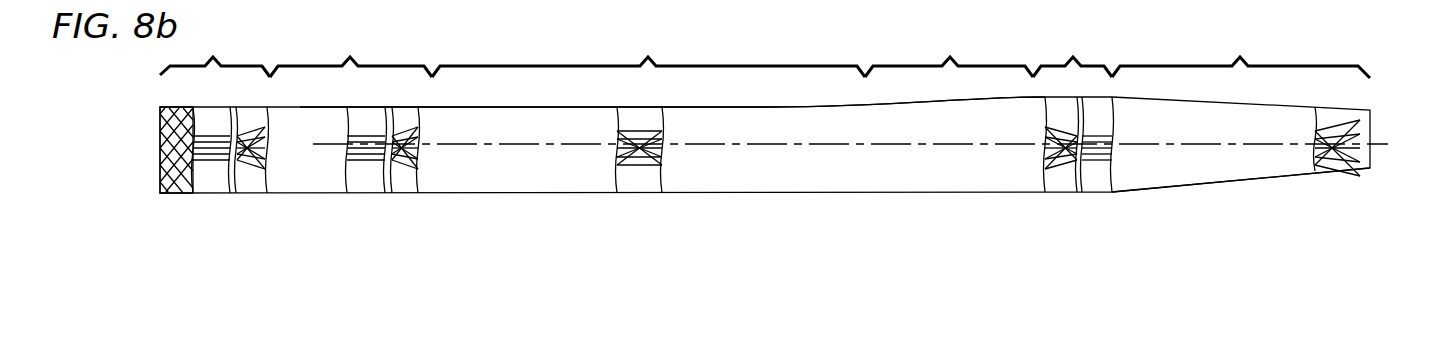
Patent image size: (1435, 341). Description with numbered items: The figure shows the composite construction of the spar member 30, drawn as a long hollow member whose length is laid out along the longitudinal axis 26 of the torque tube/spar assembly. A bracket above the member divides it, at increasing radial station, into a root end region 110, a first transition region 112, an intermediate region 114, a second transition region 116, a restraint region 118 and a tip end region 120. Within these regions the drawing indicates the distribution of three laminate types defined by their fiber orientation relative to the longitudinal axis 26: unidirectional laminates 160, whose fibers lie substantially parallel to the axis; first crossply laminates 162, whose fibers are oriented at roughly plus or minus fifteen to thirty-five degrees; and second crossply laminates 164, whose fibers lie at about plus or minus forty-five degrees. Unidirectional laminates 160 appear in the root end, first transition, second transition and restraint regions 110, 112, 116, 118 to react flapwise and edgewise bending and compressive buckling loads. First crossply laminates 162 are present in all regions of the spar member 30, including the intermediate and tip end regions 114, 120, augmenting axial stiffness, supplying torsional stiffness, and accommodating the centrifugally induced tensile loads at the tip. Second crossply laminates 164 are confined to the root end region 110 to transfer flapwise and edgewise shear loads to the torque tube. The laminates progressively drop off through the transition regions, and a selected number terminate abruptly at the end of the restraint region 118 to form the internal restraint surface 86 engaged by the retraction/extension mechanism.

The spar member 30 is at (1380, 104).
The longitudinal axis 26 is at (812, 143).
The restraint surface 86 is at (1115, 175).
The root end region 110 is at (215, 54).
The first transition region 112 is at (351, 54).
The intermediate region 114 is at (648, 54).
The second transition region 116 is at (949, 54).
The restraint region 118 is at (1072, 54).
The tip end region 120 is at (1241, 55).
The unidirectional laminates 160 is at (216, 183).
The first crossply laminates 162 is at (253, 184).
The second crossply laminates 164 is at (173, 184).